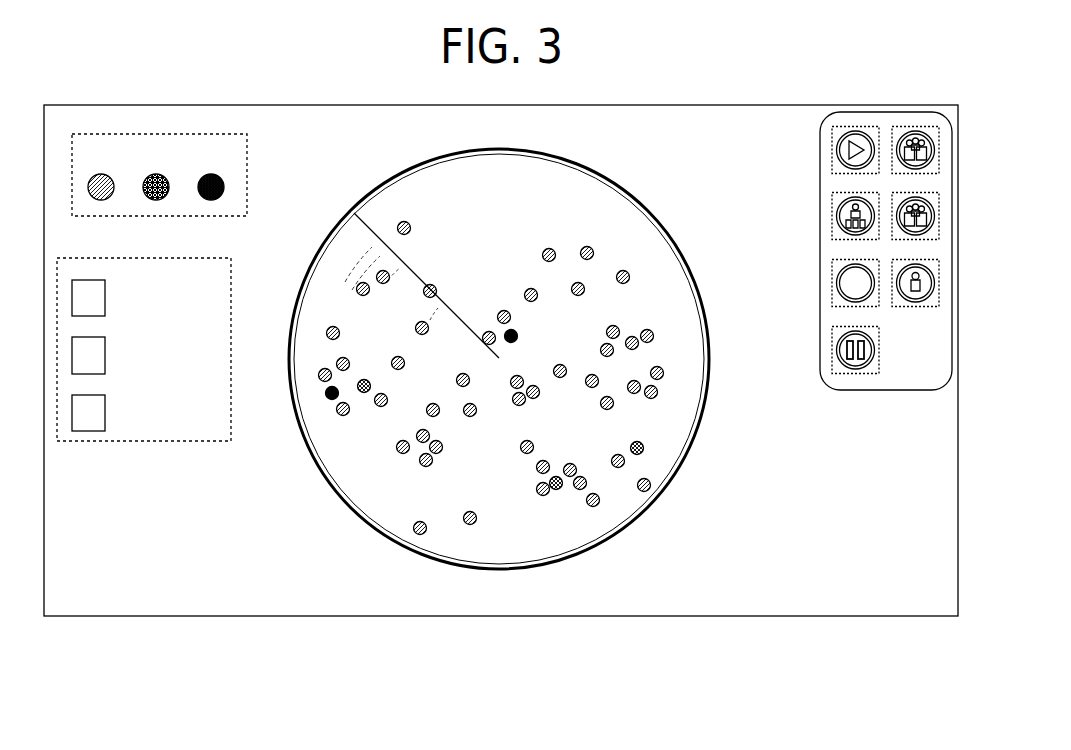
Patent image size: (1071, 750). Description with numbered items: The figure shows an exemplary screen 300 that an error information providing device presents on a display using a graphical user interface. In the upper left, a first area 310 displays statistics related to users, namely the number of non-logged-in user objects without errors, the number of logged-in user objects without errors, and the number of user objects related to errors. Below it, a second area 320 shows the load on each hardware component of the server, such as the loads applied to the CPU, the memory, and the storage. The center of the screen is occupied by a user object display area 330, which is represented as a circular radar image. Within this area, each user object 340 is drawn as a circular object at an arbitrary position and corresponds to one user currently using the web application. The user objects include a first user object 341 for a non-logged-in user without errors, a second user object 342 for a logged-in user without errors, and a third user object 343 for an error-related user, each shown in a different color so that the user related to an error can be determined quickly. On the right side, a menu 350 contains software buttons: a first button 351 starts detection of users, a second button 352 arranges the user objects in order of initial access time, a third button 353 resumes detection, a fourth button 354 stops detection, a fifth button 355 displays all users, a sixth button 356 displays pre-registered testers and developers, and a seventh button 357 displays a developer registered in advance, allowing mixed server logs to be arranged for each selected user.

The screen 300 is at (867, 616).
The first area 310 is at (247, 163).
The second area 320 is at (135, 441).
The user object display area 330 is at (592, 165).
The user object 340 is at (152, 643).
The first user object 341 is at (651, 483).
The second user object 342 is at (644, 446).
The third user object 343 is at (332, 393).
The menu 350 is at (898, 390).
The first button 351 is at (832, 150).
The second button 352 is at (832, 218).
The third button 353 is at (832, 283).
The fourth button 354 is at (832, 350).
The fifth button 355 is at (892, 173).
The sixth button 356 is at (892, 240).
The seventh button 357 is at (892, 307).